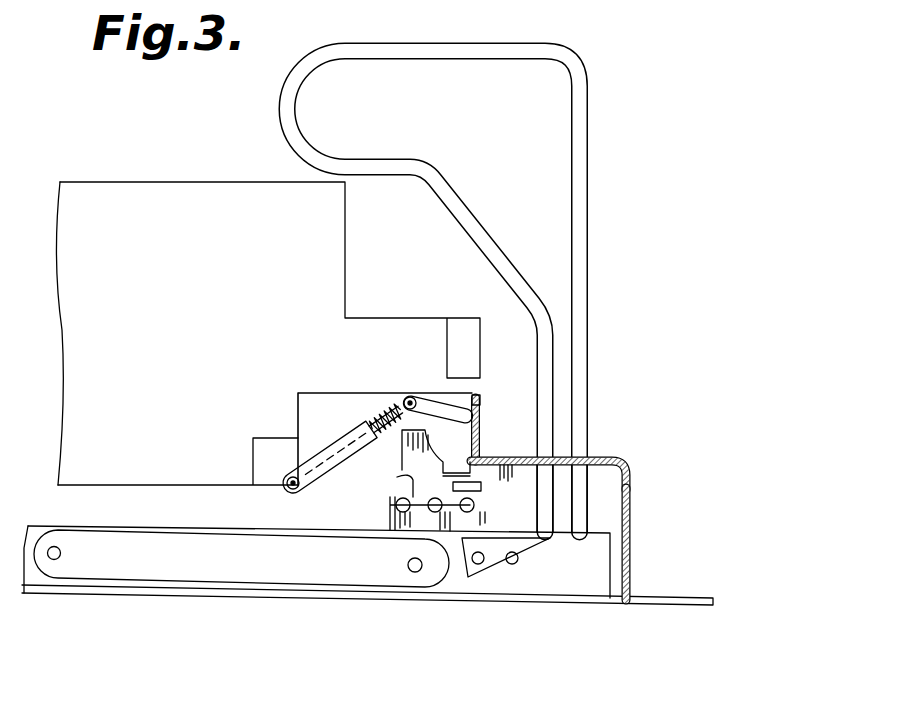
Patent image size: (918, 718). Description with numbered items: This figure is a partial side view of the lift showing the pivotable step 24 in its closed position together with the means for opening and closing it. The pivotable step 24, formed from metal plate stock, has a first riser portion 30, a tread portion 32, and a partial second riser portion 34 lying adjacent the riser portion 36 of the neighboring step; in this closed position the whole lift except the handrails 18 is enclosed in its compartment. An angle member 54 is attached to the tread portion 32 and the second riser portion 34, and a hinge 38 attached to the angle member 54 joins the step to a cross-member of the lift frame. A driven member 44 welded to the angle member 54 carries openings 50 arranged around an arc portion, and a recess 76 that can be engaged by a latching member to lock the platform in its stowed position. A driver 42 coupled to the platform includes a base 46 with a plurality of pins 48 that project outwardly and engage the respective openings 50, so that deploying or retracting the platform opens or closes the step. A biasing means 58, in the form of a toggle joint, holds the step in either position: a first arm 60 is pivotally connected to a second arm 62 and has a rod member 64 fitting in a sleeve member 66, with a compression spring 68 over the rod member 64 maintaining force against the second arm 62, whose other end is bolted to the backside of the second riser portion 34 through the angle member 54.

The handrails 18 is at (580, 100).
The pivotable step 24 is at (611, 477).
The first riser portion 30 is at (633, 476).
The tread portion 32 is at (603, 458).
The partial second riser portion 34 is at (485, 438).
The riser portion 36 is at (485, 395).
The hinge 38 is at (447, 432).
The driver 42 is at (381, 519).
The driven member 44 is at (512, 515).
The base 46 is at (437, 512).
The pins 48 is at (400, 503).
The openings 50 is at (413, 477).
The angle member 54 is at (517, 496).
The biasing means 58 is at (315, 425).
The first arm 60 is at (311, 440).
The second arm 62 is at (408, 395).
The rod member 64 is at (347, 437).
The sleeve member 66 is at (318, 425).
The compression spring 68 is at (392, 396).
The recess 76 is at (482, 487).